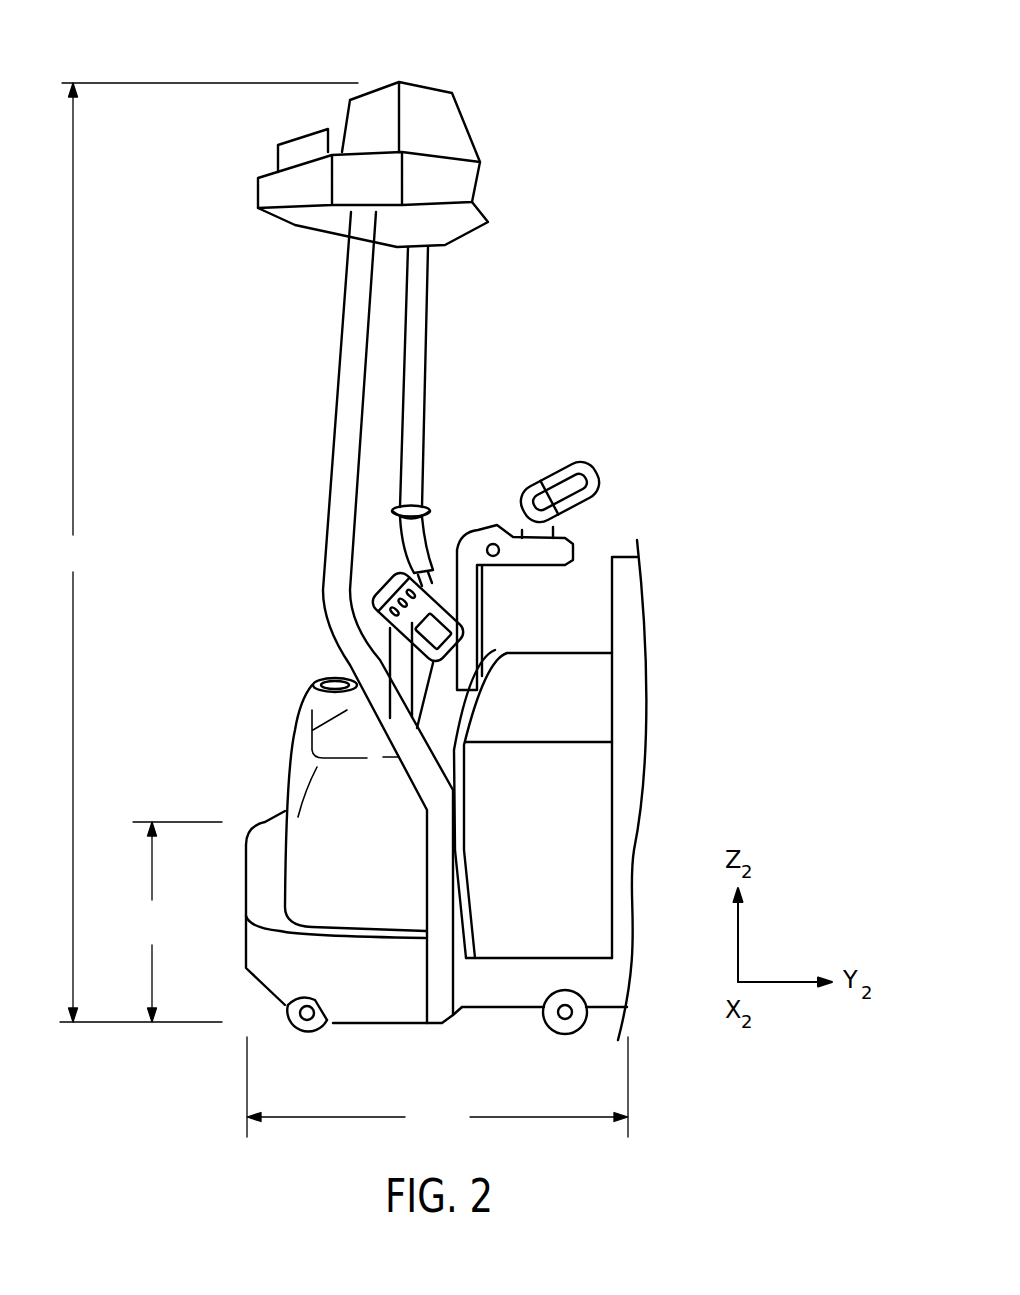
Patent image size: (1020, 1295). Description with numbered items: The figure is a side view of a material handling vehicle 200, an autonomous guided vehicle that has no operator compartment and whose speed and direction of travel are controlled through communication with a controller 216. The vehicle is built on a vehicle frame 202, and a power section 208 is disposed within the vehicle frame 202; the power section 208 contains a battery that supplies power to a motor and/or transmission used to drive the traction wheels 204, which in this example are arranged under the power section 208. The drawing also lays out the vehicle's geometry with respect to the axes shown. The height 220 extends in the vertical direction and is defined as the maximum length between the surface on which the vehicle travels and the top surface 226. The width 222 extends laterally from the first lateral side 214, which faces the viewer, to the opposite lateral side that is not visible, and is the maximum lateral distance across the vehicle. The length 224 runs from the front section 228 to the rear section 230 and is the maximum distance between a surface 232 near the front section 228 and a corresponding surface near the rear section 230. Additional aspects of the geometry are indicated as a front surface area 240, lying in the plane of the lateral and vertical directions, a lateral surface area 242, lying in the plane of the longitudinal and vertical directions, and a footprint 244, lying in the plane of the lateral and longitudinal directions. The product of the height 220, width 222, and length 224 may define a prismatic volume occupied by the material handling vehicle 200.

The material handling vehicle 200 is at (707, 152).
The vehicle frame 202 is at (328, 553).
The traction wheels 204 is at (309, 1025).
The power section 208 is at (297, 748).
The first lateral side 214 is at (595, 928).
The controller 216 is at (457, 633).
The height 220 is at (205, 552).
The width 222 is at (176, 922).
The length 224 is at (437, 1087).
The top surface 226 is at (425, 88).
The front section 228 is at (265, 767).
The rear section 230 is at (672, 827).
The surface proximal to the front section 232 is at (282, 875).
The front surface area 240 is at (213, 527).
The lateral surface area 242 is at (588, 857).
The footprint 244 is at (468, 1043).